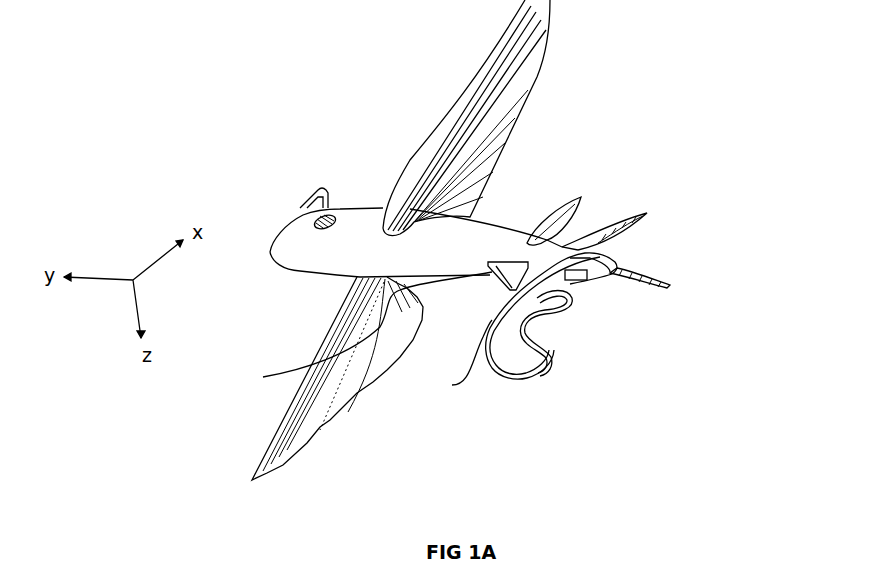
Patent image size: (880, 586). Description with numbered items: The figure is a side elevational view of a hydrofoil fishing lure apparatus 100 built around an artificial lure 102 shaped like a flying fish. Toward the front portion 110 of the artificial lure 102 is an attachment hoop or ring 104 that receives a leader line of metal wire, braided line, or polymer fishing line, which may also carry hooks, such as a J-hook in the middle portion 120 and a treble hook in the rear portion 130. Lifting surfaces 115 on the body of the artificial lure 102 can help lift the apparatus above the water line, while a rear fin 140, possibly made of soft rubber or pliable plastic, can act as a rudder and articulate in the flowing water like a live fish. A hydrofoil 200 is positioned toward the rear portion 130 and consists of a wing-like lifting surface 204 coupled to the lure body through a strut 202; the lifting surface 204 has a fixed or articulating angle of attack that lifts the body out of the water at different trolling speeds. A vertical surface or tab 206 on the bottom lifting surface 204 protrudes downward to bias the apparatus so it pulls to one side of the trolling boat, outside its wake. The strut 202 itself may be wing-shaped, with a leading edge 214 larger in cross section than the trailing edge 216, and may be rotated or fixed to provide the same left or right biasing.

The hydrofoil fishing lure apparatus 100 is at (232, 88).
The artificial lure 102 is at (311, 265).
The attachment hoop or ring 104 is at (300, 198).
The front portion 110 is at (372, 172).
The lifting surfaces 115 is at (535, 77).
The middle portion 120 is at (519, 188).
The rear portion 130 is at (599, 218).
The rear fin 140 is at (633, 277).
The hydrofoil 200 is at (652, 370).
The strut 202 is at (500, 290).
The lifting surface 204 is at (530, 363).
The vertical surface or tab 206 is at (587, 280).
The leading edge 214 is at (359, 335).
The trailing edge 216 is at (542, 347).